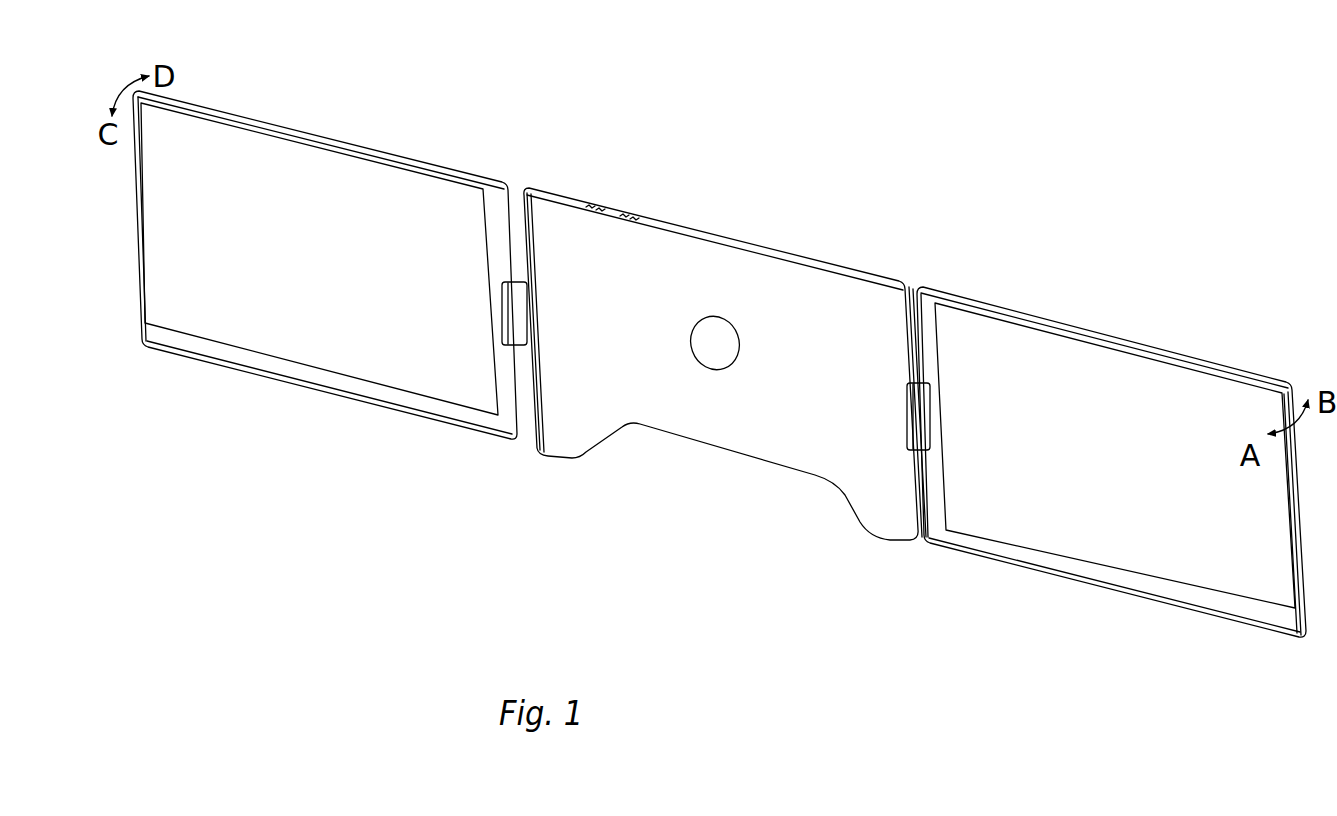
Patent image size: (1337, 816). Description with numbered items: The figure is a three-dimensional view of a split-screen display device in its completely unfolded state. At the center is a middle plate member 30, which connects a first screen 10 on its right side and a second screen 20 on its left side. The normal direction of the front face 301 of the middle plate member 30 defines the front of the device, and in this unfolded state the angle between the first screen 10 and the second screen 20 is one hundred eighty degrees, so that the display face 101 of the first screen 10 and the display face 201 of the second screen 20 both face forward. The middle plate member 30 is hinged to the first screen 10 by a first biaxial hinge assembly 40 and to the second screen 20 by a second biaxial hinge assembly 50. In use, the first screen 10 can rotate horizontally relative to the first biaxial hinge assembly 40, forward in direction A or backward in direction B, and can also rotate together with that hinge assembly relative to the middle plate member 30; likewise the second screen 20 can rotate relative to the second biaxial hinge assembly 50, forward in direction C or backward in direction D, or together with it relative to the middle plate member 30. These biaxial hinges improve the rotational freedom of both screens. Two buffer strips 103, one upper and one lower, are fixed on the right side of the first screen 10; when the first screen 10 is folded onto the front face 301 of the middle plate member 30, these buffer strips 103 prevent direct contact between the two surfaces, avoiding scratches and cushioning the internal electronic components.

The first screen 10 is at (1066, 326).
The second screen 20 is at (304, 131).
The middle plate member 30 is at (768, 248).
The first biaxial hinge assembly 40 is at (915, 418).
The second biaxial hinge assembly 50 is at (518, 322).
The display face 101 is at (1067, 545).
The buffer strips 103 is at (1263, 377).
The display face 201 is at (370, 363).
The front face 301 is at (727, 400).